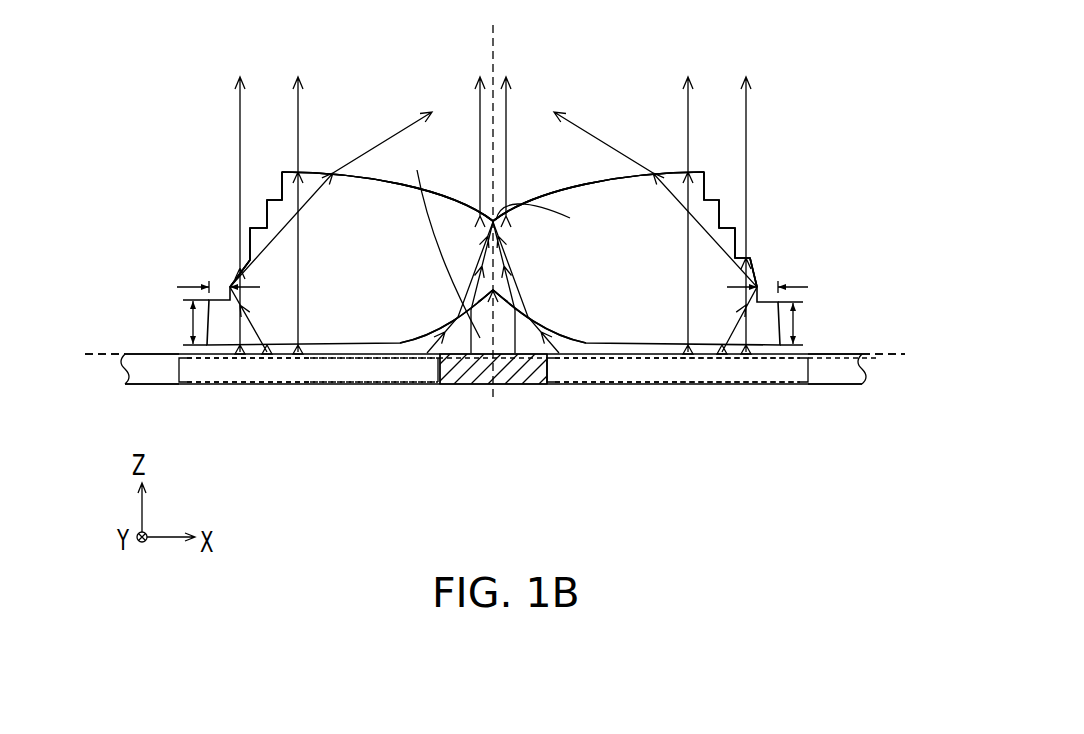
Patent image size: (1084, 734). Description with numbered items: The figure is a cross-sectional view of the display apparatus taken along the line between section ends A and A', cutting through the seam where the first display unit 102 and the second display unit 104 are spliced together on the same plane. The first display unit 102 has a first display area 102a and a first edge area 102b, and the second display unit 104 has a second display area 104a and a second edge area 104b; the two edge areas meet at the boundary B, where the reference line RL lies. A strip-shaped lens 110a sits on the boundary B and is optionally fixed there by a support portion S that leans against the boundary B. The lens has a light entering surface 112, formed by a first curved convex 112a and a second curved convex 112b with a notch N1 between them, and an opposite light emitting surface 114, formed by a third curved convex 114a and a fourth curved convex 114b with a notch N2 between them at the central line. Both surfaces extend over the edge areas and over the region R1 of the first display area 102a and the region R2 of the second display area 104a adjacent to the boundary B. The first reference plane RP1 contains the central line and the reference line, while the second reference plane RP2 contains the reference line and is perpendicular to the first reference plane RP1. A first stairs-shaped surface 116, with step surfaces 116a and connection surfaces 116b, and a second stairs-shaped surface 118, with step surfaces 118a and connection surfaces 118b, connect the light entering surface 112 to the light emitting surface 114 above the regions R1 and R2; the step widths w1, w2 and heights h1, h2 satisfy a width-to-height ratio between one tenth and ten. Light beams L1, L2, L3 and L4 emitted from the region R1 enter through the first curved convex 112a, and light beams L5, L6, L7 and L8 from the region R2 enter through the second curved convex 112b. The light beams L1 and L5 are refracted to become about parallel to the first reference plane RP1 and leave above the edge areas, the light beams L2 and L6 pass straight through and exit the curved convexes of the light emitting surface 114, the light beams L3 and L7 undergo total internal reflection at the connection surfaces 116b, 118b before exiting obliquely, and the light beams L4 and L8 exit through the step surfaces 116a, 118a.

The first reference plane RP1 is at (492, 200).
The second reference plane RP2 is at (875, 355).
The strip-shaped lens 110a is at (819, 232).
The light emitting surface 114 is at (658, 40).
The third curved convex 114a is at (453, 192).
The fourth curved convex 114b is at (589, 172).
The first stairs-shaped surface 116 is at (168, 160).
The step surfaces 116a is at (252, 210).
The connection surfaces 116b is at (240, 235).
The second stairs-shaped surface 118 is at (812, 152).
The step surfaces 118a is at (734, 210).
The connection surfaces 118b is at (746, 235).
The support portion S is at (471, 339).
The boundary B is at (500, 344).
The notch N1 is at (442, 239).
The notch N2 is at (570, 221).
The light beam L1 is at (474, 133).
The light beam L2 is at (300, 197).
The light beam L3 is at (343, 221).
The light beam L4 is at (241, 197).
The light beam L5 is at (512, 133).
The light beam L6 is at (688, 197).
The light beam L7 is at (643, 222).
The light beam L8 is at (746, 197).
The width of each step w1 is at (218, 271).
The width of each step w2 is at (767, 271).
The height of each step h1 is at (184, 322).
The height of each step h2 is at (803, 323).
The first display unit 102 is at (427, 457).
The first display area 102a is at (318, 375).
The first edge area 102b is at (442, 372).
The light entering surface 112 is at (547, 457).
The first curved convex 112a is at (443, 357).
The second curved convex 112b is at (543, 357).
The second display unit 104 is at (663, 457).
The second display area 104a is at (668, 375).
The second edge area 104b is at (542, 372).
The region R1 is at (178, 360).
The region R2 is at (808, 360).
The section line end A is at (105, 386).
The section line end A' is at (883, 386).